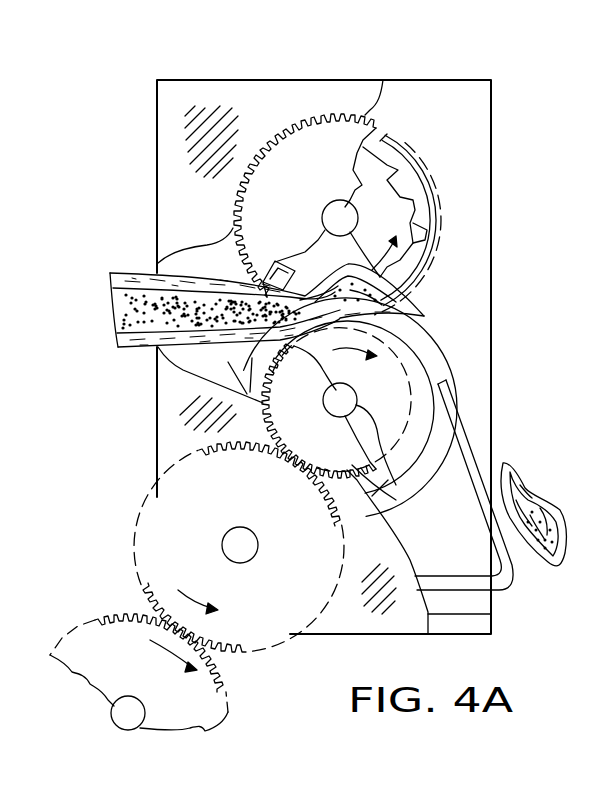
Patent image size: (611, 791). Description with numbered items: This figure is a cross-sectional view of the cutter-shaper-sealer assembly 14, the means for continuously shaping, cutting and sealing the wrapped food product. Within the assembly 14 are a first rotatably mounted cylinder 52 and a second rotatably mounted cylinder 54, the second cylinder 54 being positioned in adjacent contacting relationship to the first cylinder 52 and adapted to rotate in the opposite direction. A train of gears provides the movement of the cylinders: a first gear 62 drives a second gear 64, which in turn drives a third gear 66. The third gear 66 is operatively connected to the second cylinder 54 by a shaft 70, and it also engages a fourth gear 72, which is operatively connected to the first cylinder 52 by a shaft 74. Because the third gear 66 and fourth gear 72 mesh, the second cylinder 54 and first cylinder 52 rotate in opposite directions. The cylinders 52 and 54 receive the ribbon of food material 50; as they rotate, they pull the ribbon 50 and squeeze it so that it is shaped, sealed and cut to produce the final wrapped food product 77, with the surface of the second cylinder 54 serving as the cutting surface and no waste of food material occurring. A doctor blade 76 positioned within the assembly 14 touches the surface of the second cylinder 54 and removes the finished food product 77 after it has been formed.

The cutter-shaper-sealer assembly 14 is at (326, 55).
The ribbon of food material 50 is at (138, 274).
The first rotatably mounted cylinder 52 is at (402, 152).
The second rotatably mounted cylinder 54 is at (408, 334).
The first gear 62 is at (128, 665).
The second gear 64 is at (308, 566).
The third gear 66 is at (306, 426).
The shaft 70 is at (396, 500).
The fourth gear 72 is at (308, 194).
The shaft 74 is at (350, 216).
The doctor blade 76 is at (478, 452).
The final wrapped food product 77 is at (540, 495).